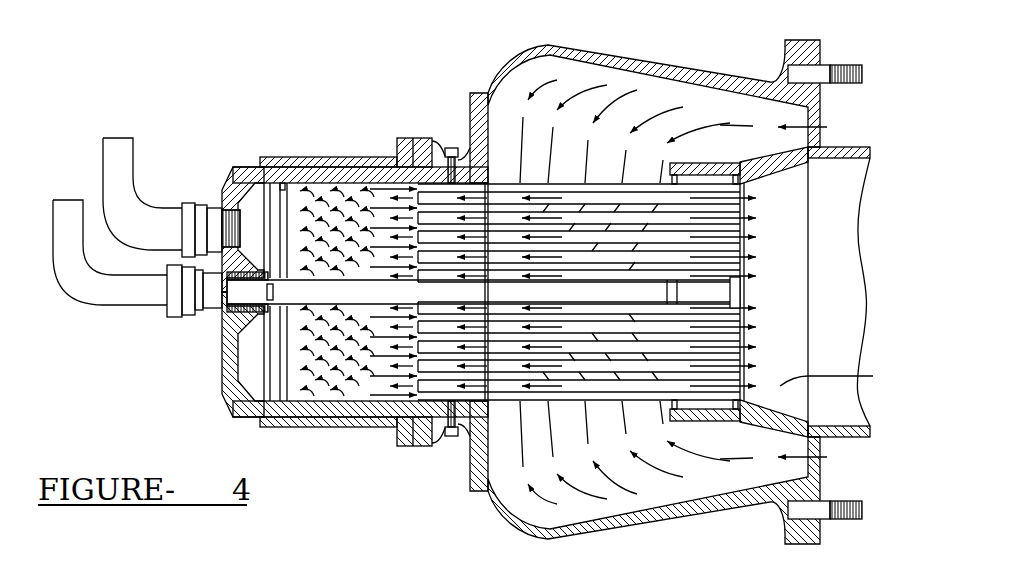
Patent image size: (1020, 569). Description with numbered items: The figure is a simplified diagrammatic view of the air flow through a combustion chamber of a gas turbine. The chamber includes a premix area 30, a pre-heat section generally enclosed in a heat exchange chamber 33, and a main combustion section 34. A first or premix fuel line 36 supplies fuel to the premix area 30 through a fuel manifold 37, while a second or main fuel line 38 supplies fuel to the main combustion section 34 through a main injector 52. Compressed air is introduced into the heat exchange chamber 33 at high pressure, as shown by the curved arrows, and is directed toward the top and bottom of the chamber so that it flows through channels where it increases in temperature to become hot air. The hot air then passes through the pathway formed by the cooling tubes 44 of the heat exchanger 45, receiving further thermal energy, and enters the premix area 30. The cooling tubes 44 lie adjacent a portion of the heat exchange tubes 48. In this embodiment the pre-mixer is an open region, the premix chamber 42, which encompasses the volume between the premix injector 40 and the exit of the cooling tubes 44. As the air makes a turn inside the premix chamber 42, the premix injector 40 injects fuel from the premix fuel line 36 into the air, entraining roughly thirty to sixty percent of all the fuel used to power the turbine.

The premix area 30 is at (275, 156).
The heat exchange chamber 33 is at (512, 62).
The main combustion section 34 is at (853, 250).
The premix fuel line 36 is at (130, 170).
The fuel manifold 37 is at (257, 357).
The main fuel line 38 is at (72, 257).
The premix injector 40 is at (285, 182).
The premix chamber 42 is at (340, 190).
The cooling tubes 44 is at (440, 190).
The heat exchanger 45 is at (570, 147).
The heat exchange tubes 48 is at (602, 178).
The main injector 52 is at (843, 377).